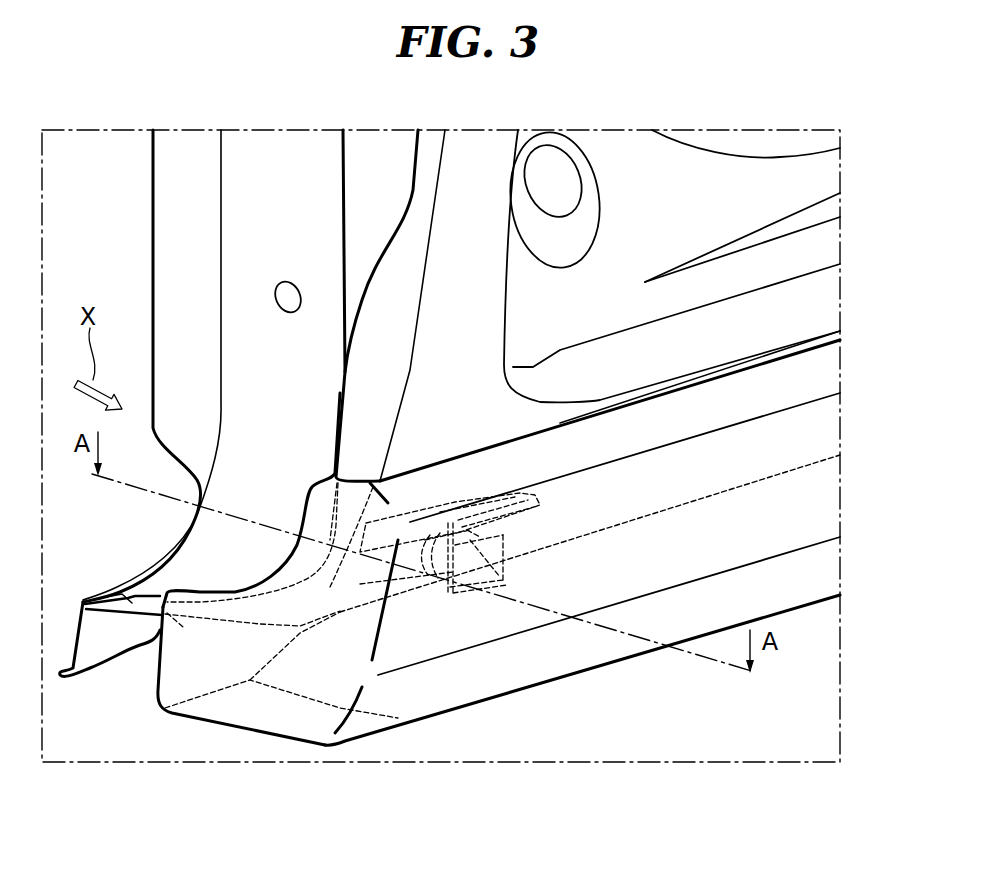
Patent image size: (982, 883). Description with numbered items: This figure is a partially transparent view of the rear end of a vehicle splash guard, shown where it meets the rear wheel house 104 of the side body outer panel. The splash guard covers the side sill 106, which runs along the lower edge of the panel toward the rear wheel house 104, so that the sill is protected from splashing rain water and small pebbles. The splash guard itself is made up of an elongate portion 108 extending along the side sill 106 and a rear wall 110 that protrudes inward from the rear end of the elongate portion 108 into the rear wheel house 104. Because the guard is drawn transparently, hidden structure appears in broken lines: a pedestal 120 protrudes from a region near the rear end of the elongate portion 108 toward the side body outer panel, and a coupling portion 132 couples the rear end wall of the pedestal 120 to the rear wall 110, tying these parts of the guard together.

The rear wheel house 104 is at (68, 232).
The side sill 106 is at (735, 488).
The elongate portion 108 is at (490, 618).
The rear wall 110 is at (277, 712).
The pedestal 120 is at (480, 500).
The coupling portion 132 is at (415, 503).